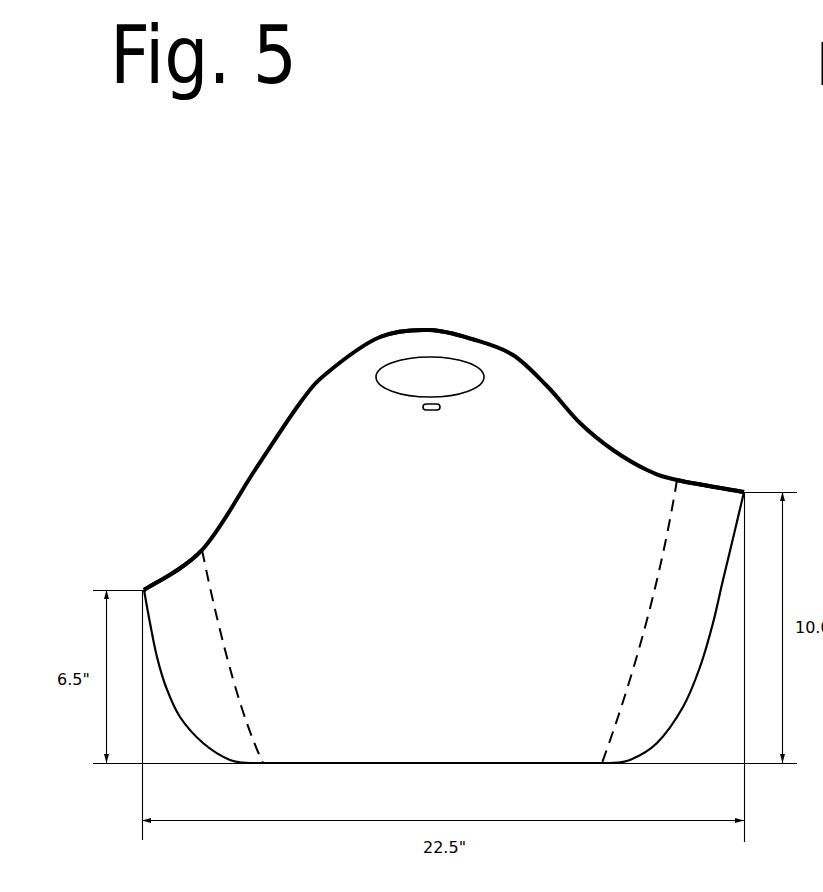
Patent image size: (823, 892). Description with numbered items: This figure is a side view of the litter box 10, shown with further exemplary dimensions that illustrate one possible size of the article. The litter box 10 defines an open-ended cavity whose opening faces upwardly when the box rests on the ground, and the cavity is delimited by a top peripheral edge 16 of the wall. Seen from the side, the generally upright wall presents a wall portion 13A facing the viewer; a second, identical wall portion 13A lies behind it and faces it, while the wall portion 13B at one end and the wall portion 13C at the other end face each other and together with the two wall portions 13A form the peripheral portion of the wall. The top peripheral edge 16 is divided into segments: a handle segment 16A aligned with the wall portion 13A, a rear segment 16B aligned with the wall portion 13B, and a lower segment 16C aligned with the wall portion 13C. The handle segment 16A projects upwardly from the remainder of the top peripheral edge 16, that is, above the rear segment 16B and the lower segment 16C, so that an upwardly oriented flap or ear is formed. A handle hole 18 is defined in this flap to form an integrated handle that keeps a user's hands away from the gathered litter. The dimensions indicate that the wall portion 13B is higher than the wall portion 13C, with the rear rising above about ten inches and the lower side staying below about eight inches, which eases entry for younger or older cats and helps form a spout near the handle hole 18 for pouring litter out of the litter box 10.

The litter box 10 is at (434, 532).
The wall portion 13A is at (460, 632).
The wall portion 13B is at (712, 625).
The wall portion 13C is at (165, 685).
The top peripheral edge 16 is at (255, 468).
The handle segment 16A is at (430, 330).
The rear segment 16B is at (744, 492).
The lower segment 16C is at (145, 590).
The handle hole 18 is at (432, 395).